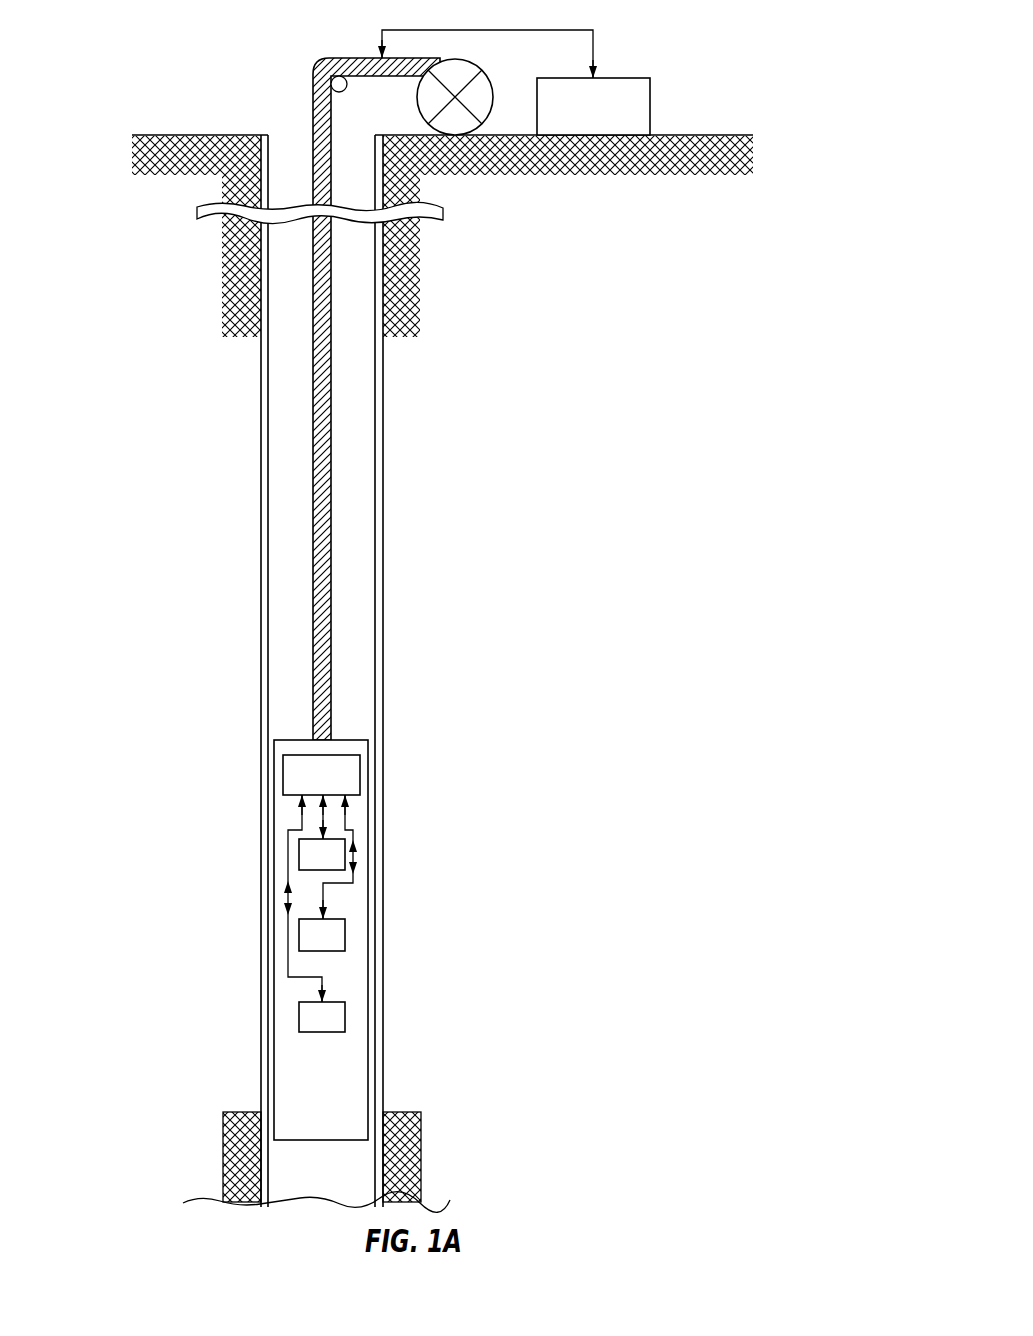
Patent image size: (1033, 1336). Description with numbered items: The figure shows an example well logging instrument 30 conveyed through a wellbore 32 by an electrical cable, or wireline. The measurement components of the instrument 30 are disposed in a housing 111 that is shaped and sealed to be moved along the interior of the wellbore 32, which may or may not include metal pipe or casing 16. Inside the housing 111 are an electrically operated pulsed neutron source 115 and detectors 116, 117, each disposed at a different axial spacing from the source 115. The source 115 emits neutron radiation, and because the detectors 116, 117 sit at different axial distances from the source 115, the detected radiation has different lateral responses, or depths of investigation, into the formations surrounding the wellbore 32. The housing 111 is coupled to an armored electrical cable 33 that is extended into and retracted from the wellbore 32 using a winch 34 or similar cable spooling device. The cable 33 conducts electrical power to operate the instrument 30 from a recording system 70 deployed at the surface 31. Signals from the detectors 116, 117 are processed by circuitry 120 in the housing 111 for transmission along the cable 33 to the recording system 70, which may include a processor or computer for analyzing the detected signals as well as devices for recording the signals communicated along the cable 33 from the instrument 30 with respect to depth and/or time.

The casing 16 is at (262, 610).
The well logging instrument 30 is at (296, 735).
The surface 31 is at (183, 135).
The wellbore 32 is at (295, 157).
The armored electrical cable 33 is at (330, 76).
The winch 34 is at (482, 124).
The recording system 70 is at (637, 90).
The housing 111 is at (268, 1063).
The pulsed neutron source 115 is at (338, 1017).
The detector 116 is at (338, 932).
The detector 117 is at (307, 858).
The circuitry 120 is at (337, 780).